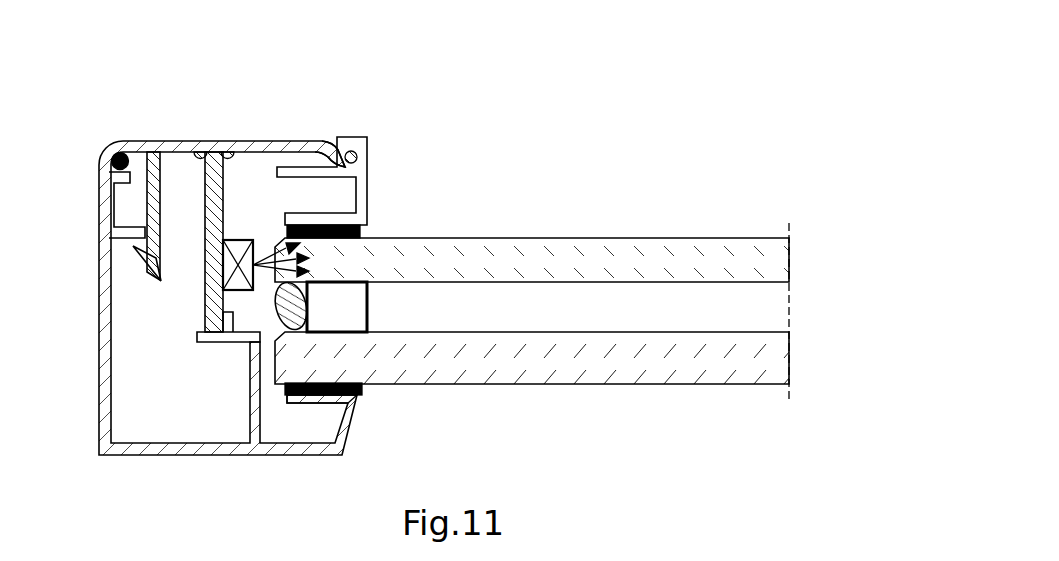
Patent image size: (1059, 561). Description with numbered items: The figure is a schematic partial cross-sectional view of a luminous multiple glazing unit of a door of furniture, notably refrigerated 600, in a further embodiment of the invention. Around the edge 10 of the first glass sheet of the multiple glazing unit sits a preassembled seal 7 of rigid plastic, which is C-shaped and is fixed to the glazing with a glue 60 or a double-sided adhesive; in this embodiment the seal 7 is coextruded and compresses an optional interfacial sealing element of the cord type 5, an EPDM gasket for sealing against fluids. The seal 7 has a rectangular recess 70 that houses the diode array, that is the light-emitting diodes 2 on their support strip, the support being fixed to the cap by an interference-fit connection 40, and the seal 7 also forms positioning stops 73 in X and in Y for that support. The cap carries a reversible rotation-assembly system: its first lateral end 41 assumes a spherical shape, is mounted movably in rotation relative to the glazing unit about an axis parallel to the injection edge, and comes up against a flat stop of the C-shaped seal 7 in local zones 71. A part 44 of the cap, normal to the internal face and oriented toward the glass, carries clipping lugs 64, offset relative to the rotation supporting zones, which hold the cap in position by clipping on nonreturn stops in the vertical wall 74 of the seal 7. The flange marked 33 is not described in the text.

The luminous multiple glazing unit 600 is at (170, 60).
The preassembled seal 7 is at (100, 333).
The recess 70 is at (300, 428).
The local zones 71 is at (337, 140).
The interfacial sealing element 5 is at (112, 150).
The vertical wall 74 is at (127, 234).
The clipping lugs 64 is at (133, 248).
The part of the cap 44 is at (152, 186).
The interference-fit connection 40 is at (215, 150).
The positioning stops 73 is at (227, 320).
The flange 33 is at (200, 333).
The light-emitting diodes 2 is at (243, 240).
The edge 10 is at (273, 243).
The glue 60 is at (362, 232).
The first lateral end 41 is at (366, 152).